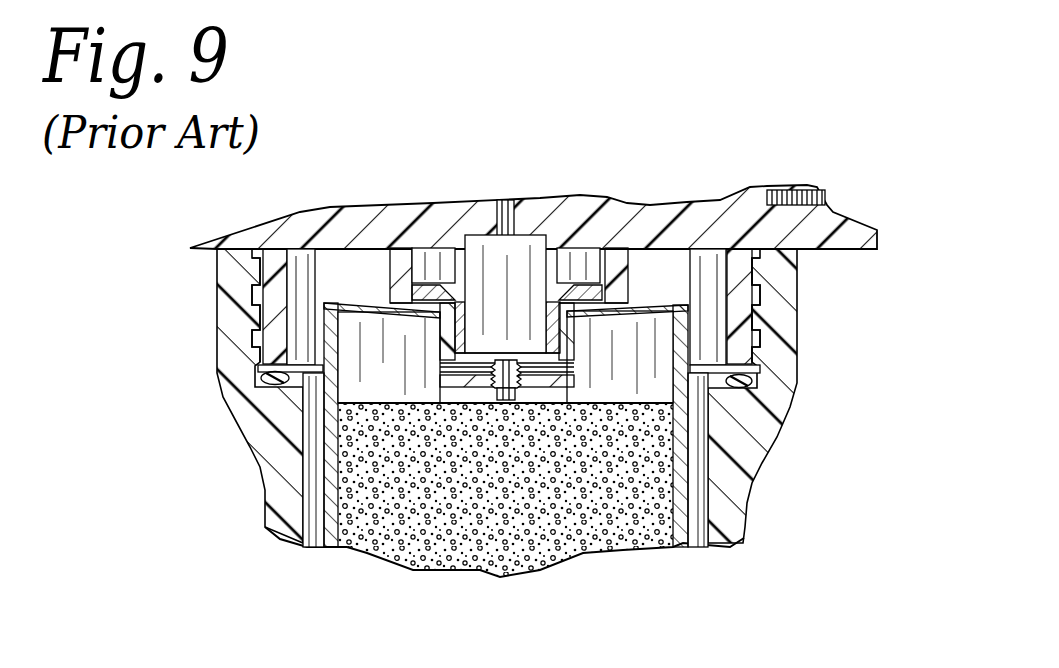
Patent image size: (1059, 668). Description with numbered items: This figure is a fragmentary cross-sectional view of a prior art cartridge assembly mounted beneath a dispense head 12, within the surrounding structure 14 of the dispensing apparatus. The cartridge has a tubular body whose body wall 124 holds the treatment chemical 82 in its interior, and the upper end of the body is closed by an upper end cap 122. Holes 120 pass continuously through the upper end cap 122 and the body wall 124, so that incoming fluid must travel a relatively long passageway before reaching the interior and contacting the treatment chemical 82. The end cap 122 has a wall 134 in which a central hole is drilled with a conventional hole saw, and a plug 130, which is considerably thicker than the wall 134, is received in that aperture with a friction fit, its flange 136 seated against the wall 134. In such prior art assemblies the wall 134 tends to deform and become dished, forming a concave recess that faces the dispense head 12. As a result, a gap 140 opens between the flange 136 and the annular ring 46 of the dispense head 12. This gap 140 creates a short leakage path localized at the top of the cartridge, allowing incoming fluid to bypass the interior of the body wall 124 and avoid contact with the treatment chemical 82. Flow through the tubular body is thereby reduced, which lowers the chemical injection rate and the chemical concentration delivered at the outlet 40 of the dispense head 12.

The dispense head 12 is at (841, 208).
The container body 14 is at (737, 487).
The outlet 40 is at (805, 188).
The annular ring 46 is at (393, 280).
The treatment chemical 82 is at (583, 517).
The holes 120 is at (753, 345).
The upper end cap 122 is at (323, 374).
The body wall 124 is at (323, 377).
The plug 130 is at (723, 124).
The wall 134 is at (637, 307).
The flange 136 is at (573, 297).
The gap 140 is at (433, 283).